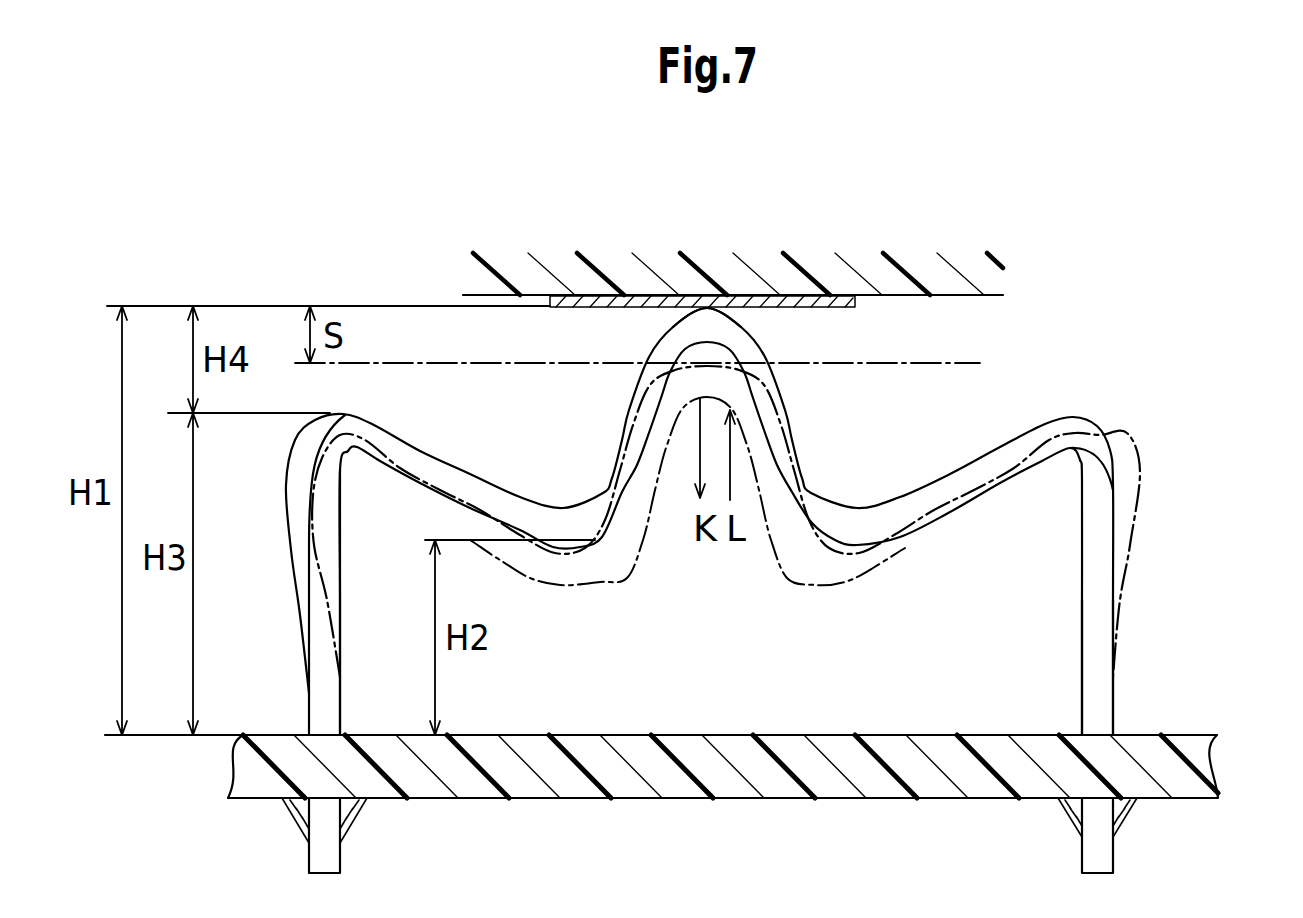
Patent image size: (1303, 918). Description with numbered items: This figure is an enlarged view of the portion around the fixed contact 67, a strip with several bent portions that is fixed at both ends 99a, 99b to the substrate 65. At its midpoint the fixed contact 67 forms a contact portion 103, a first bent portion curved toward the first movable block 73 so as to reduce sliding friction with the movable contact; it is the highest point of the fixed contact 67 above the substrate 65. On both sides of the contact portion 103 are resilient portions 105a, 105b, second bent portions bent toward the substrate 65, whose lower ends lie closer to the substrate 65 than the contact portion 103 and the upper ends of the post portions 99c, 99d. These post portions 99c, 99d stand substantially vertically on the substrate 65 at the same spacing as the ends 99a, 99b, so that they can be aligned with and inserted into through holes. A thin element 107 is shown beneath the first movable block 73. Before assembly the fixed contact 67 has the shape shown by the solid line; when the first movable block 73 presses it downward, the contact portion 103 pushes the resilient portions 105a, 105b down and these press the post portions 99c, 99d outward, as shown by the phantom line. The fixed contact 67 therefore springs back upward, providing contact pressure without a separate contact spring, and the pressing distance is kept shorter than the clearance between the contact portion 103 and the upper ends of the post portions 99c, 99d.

The first movable block 73 is at (500, 270).
The contact portion 103 is at (716, 320).
The conductive pad 107 is at (847, 312).
The substrate 65 is at (1003, 735).
The fixed contact 67 is at (1129, 547).
The end 99a is at (325, 722).
The end 99b is at (1100, 690).
The post portion 99c is at (318, 537).
The post portion 99d is at (1113, 490).
The resilient portion 105a is at (600, 537).
The resilient portion 105b is at (873, 590).